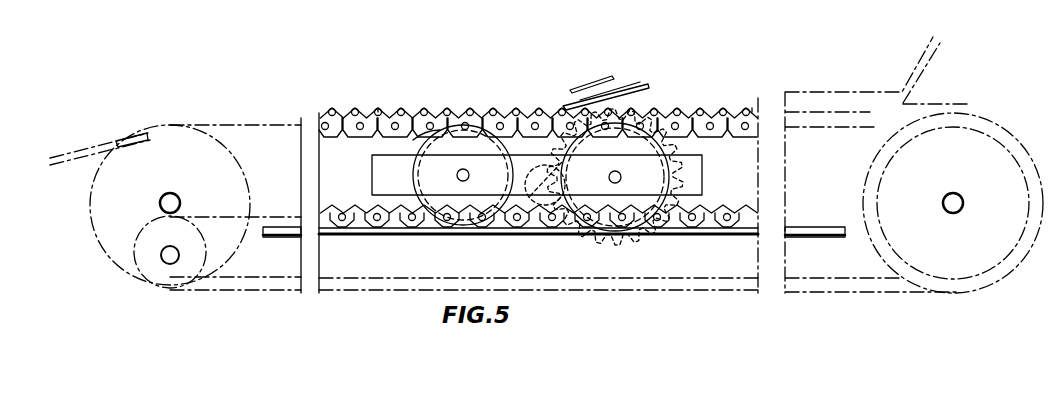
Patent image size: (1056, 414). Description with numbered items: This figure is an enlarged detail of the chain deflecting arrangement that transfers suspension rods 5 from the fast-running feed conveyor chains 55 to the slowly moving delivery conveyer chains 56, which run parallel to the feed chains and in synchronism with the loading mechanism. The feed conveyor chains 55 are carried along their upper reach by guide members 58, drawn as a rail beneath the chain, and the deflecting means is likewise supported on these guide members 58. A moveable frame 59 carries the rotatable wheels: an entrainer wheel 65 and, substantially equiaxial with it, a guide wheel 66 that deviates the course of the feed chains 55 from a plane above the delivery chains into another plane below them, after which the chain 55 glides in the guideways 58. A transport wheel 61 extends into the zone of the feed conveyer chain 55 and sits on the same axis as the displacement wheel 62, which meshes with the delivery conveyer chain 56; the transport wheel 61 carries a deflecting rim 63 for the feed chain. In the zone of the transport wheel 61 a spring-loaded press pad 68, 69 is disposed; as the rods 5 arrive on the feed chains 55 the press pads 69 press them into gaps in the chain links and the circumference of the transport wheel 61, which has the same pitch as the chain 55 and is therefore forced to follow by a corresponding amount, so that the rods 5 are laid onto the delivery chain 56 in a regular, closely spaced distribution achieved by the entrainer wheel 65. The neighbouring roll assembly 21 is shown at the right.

The suspension rods 5 is at (380, 111).
The roll assembly 21 is at (880, 84).
The feed conveyor chains 55 is at (685, 112).
The delivery conveyer chains 56 is at (345, 130).
The guide members 58 is at (510, 235).
The moveable frame 59 is at (702, 170).
The transport wheel 61 is at (628, 242).
The displacement wheel 62 is at (666, 198).
The deflecting rim 63 is at (578, 222).
The entrainer wheel 65 is at (424, 140).
The guide wheel 66 is at (464, 150).
The springloaded press pad 68 is at (612, 86).
The press pad 69 is at (568, 106).